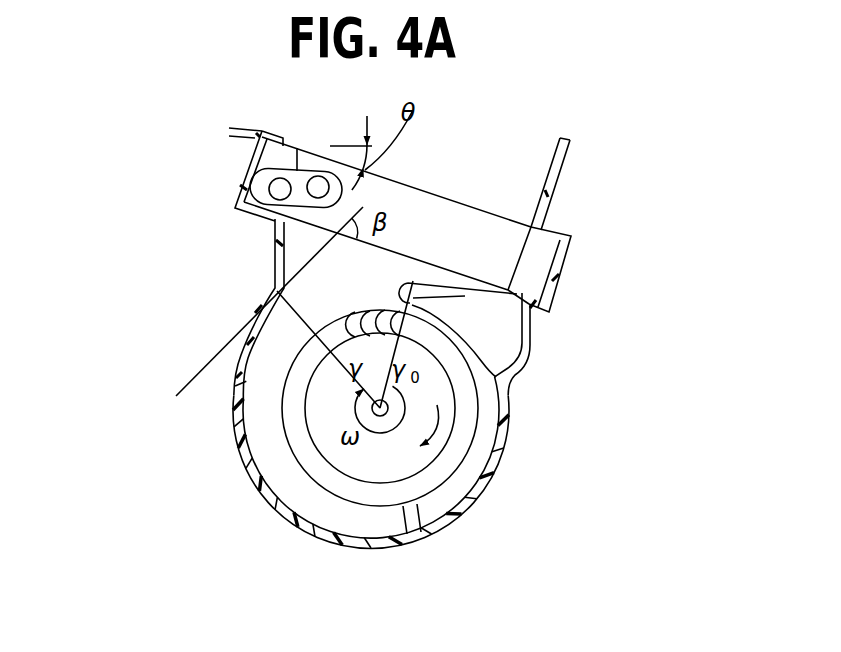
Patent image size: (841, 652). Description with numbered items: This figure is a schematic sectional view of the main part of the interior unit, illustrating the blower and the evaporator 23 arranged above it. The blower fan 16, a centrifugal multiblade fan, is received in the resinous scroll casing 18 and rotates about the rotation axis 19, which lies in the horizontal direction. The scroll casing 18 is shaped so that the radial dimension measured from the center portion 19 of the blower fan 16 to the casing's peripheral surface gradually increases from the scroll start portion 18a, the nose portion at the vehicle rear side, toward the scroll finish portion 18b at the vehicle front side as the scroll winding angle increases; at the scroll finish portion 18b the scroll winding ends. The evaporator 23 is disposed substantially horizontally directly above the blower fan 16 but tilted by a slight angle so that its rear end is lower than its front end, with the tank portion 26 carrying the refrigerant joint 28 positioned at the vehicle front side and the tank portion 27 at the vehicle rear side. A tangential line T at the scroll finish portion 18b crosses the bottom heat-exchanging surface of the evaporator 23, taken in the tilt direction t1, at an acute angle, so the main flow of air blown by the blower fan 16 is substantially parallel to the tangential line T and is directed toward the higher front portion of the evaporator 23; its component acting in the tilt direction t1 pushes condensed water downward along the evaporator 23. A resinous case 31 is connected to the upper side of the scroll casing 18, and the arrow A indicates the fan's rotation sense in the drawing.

The blower fan 16 is at (417, 533).
The scroll casing 18 is at (273, 507).
The scroll start portion (nose portion) 18a is at (517, 296).
The scroll finish portion 18b is at (274, 284).
The rotation axis (center portion) 19 is at (380, 416).
The evaporator 23 is at (465, 233).
The tank portion 26 is at (265, 158).
The tank portion 27 is at (540, 268).
The refrigerant joint 28 is at (259, 190).
The resinous case 31 is at (560, 172).
The tangential line T is at (257, 316).
The rotation direction A is at (433, 427).
The tilt direction t1 is at (455, 275).